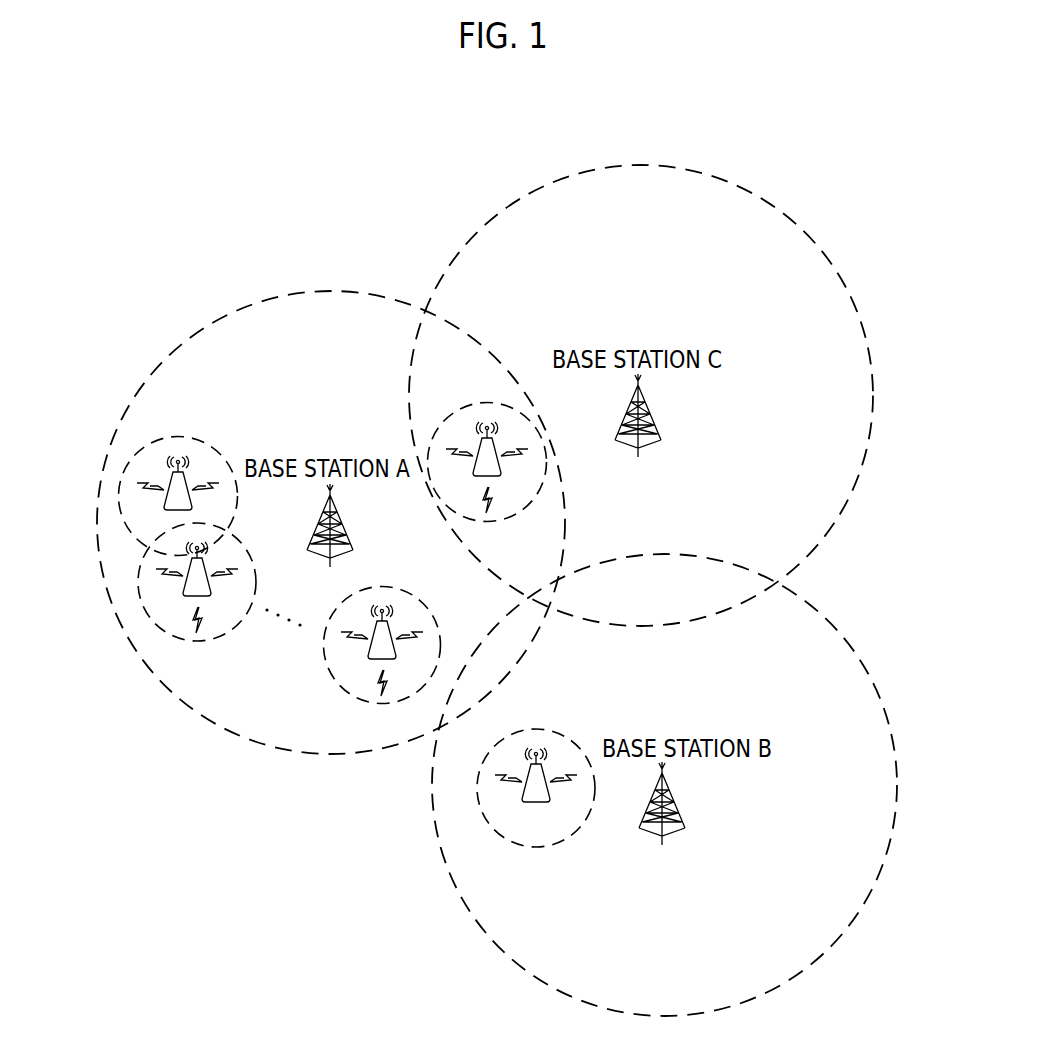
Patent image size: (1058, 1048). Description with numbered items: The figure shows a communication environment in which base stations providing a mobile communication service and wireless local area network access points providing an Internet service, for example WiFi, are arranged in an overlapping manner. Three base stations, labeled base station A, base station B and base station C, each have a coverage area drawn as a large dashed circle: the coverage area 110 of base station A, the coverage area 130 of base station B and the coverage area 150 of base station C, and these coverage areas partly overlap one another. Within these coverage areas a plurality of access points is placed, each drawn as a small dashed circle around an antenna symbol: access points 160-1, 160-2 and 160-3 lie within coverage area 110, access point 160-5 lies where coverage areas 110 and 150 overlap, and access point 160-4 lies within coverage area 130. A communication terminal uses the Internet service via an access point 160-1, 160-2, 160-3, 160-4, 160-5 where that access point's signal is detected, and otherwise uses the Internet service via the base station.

The coverage area 110 is at (278, 298).
The coverage area 150 is at (715, 177).
The coverage area 130 is at (859, 651).
The access point 160-1 is at (188, 474).
The access point 160-2 is at (210, 593).
The access point 160-3 is at (390, 627).
The access point 160-4 is at (537, 803).
The access point 160-5 is at (498, 436).